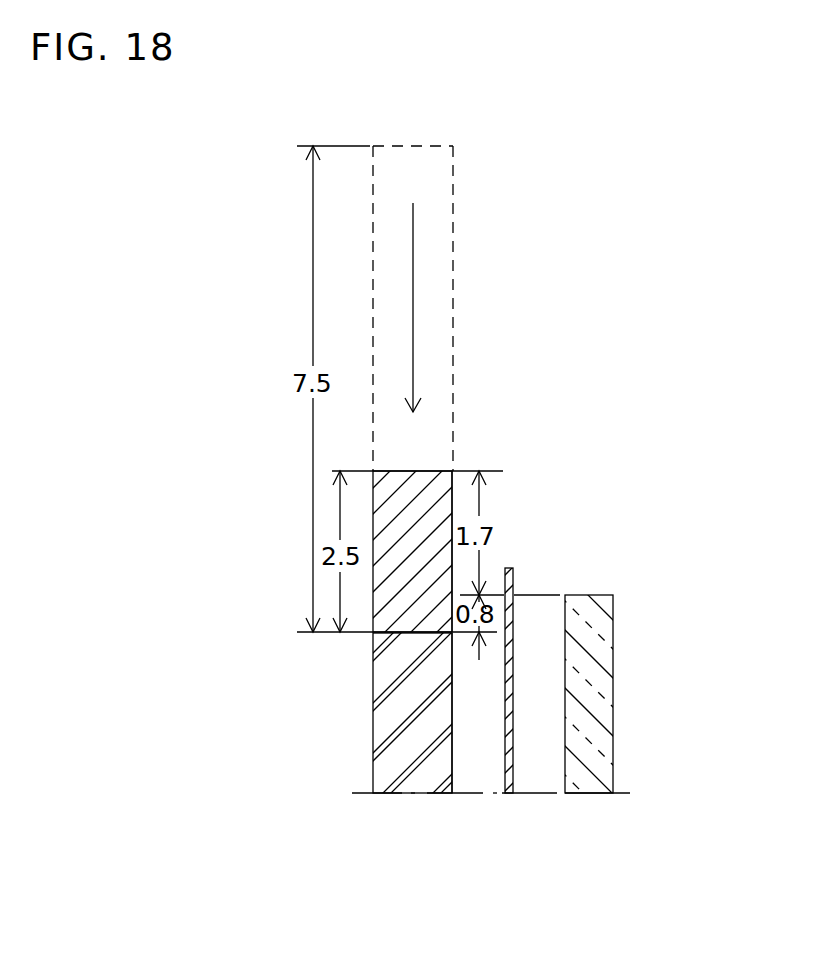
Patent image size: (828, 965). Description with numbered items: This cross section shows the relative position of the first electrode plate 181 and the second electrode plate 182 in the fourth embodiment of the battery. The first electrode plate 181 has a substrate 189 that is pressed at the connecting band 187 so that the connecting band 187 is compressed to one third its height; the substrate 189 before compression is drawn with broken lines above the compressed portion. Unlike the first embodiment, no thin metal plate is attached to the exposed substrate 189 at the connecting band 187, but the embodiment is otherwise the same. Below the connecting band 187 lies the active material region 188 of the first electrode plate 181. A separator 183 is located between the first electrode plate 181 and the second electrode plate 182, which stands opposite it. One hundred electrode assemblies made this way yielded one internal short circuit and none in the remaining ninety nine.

The first electrode plate 181 is at (382, 722).
The second electrode plate 182 is at (603, 681).
The separator 183 is at (509, 620).
The connecting band 187 is at (456, 563).
The active material region 188 is at (453, 733).
The substrate 189 is at (430, 495).